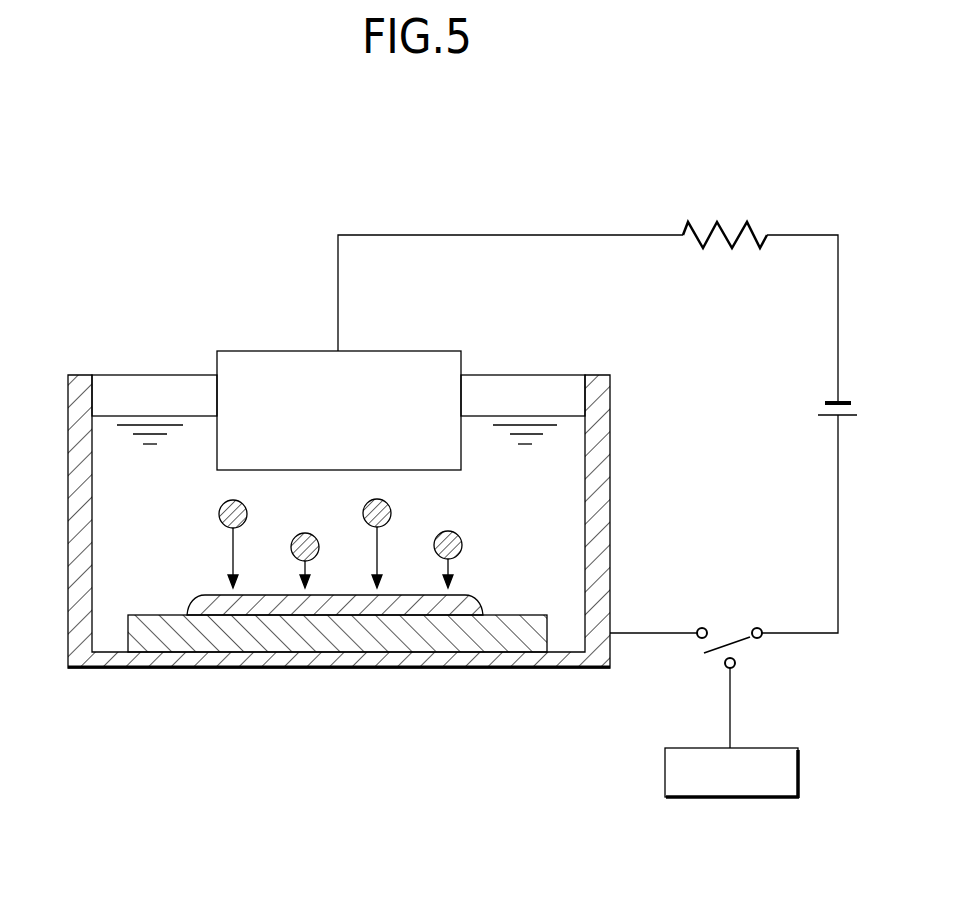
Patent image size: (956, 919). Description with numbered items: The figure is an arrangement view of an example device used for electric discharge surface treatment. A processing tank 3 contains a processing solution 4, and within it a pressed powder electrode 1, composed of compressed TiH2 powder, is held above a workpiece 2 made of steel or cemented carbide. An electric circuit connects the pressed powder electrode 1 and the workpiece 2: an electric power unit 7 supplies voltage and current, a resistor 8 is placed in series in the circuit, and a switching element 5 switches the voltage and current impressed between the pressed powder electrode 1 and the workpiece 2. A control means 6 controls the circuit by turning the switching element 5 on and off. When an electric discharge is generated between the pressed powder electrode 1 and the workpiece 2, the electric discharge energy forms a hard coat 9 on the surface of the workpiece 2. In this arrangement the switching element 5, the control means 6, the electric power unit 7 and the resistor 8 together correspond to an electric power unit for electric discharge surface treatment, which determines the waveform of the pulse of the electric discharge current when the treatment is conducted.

The pressed powder electrode 1 is at (293, 362).
The workpiece 2 is at (173, 642).
The processing tank 3 is at (80, 377).
The processing solution 4 is at (103, 535).
The switching element 5 is at (740, 647).
The control means 6 is at (730, 800).
The electric power unit 7 is at (845, 402).
The resistor 8 is at (732, 230).
The hard coat 9 is at (335, 612).